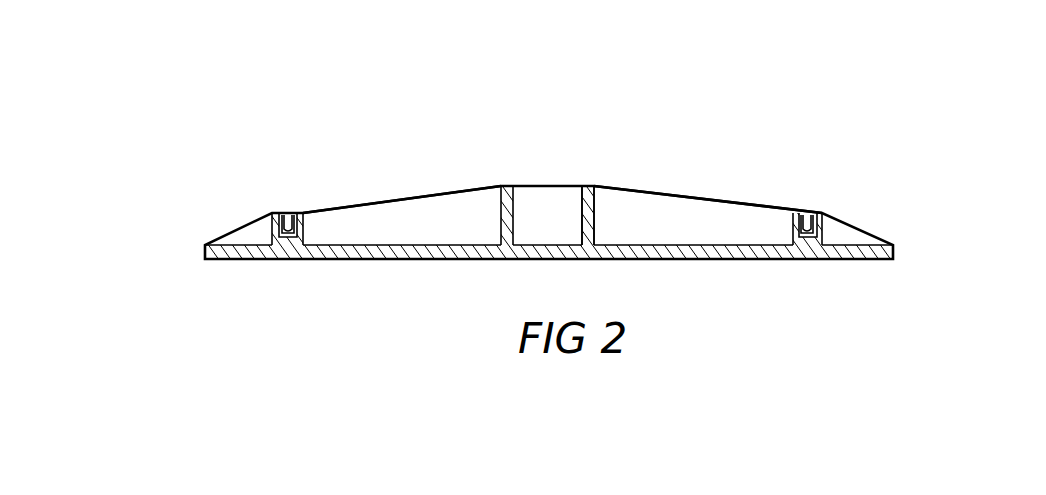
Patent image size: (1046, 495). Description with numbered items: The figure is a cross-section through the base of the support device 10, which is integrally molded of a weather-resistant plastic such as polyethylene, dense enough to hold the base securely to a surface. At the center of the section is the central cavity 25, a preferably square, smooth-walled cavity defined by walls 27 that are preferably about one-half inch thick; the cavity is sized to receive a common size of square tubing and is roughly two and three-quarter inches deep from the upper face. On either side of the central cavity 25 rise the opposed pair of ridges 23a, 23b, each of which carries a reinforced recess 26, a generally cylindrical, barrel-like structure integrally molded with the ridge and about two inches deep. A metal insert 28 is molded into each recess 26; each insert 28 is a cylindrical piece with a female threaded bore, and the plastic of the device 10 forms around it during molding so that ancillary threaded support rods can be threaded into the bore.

The support device 10 is at (186, 203).
The ridge 23a is at (409, 208).
The ridge 23b is at (698, 213).
The central cavity 25 is at (546, 195).
The reinforced recess 26 is at (289, 212).
The walls 27 is at (595, 215).
The metal insert 28 is at (280, 212).